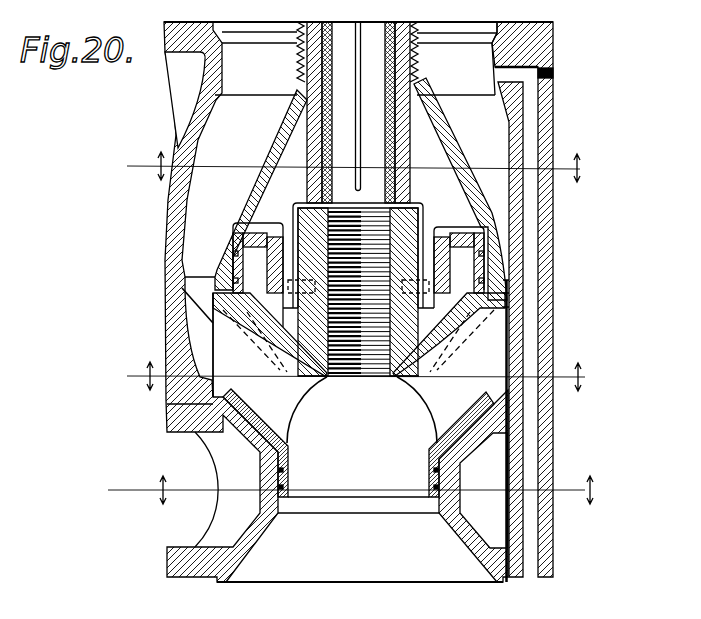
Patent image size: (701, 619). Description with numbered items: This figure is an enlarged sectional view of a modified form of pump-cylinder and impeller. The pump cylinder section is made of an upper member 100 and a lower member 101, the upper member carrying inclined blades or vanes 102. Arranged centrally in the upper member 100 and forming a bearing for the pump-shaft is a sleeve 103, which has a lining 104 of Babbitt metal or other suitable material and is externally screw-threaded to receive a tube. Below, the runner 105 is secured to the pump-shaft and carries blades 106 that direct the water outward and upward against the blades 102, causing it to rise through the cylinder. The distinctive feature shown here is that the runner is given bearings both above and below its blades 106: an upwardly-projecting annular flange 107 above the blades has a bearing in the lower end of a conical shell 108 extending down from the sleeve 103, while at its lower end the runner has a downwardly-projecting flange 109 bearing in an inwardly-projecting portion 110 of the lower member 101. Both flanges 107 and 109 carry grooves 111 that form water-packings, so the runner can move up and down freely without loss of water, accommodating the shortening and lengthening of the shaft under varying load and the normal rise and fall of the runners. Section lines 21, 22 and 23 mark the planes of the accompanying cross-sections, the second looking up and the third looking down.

The upper member of the pump cylinder section 100 is at (170, 239).
The lower member of the pump cylinder section 101 is at (173, 421).
The inclined blades or vanes 102 is at (196, 287).
The sleeve 103 is at (311, 136).
The lining 104 is at (334, 50).
The runner 105 is at (416, 504).
The blades 106 is at (222, 356).
The upwardly-projecting annular flange 107 is at (266, 232).
The conical shell 108 is at (250, 204).
The downwardly-projecting flange 109 is at (285, 488).
The inwardly-projecting portion 110 is at (276, 472).
The grooves 111 is at (235, 280).
The section line 21- 21 is at (355, 167).
The section line 22- 22 is at (354, 376).
The section line 23- 23 is at (347, 490).